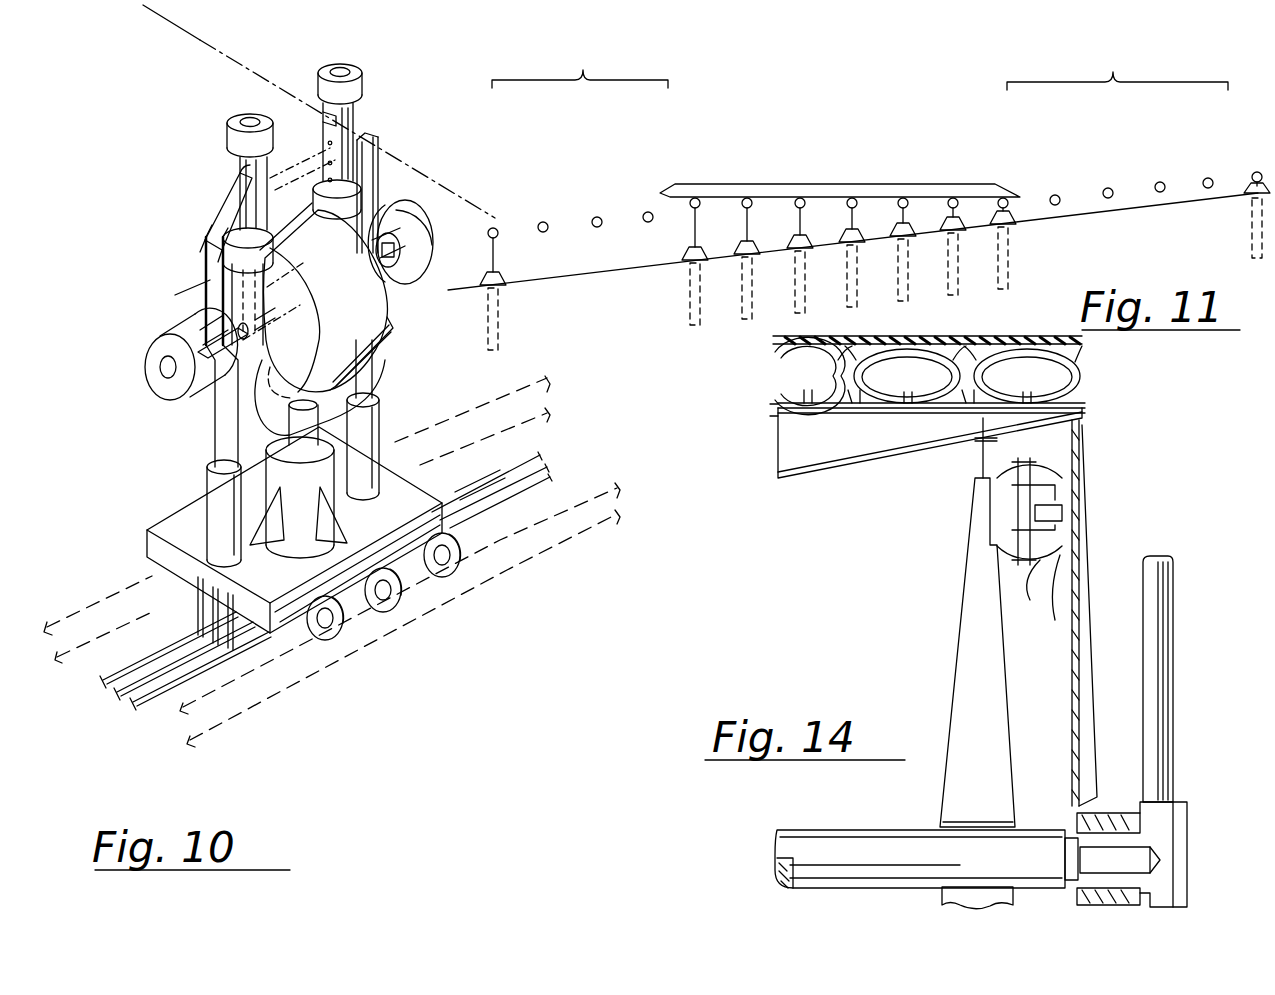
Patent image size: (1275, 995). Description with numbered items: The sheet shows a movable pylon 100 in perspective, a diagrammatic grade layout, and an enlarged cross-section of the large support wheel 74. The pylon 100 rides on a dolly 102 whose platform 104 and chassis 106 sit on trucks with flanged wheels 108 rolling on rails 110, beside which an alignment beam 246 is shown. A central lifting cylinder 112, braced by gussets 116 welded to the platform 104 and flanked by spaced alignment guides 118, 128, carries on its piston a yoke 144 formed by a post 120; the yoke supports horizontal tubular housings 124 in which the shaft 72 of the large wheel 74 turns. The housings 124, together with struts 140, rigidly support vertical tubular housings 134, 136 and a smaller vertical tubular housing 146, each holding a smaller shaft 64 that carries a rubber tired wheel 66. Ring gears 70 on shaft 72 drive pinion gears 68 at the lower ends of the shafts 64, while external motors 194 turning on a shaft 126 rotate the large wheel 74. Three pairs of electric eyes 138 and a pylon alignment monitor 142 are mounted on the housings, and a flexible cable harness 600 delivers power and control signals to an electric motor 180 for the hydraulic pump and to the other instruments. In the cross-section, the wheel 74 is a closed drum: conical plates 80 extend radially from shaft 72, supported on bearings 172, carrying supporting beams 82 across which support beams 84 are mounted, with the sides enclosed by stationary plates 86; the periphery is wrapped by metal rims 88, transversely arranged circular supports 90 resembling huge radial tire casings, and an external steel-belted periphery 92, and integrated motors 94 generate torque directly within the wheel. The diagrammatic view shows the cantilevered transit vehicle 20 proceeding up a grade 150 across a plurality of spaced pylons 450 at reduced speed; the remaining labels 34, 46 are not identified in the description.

In FIG. 11, the transit vehicle 20 is at (824, 175).
In FIG. 11, the bar end 34 is at (1005, 186).
In FIG. 11, the post 46 is at (732, 210).
In FIG. 10, the shaft 64 is at (222, 215).
In FIG. 10, the rubber tired wheel 66 is at (335, 62).
In FIG. 11, the rubber tired wheel 66 is at (695, 197).
In FIG. 10, the pinion gear 68 is at (290, 270).
In FIG. 14, the pinion gear 68 is at (1187, 850).
In FIG. 10, the ring gear 70 is at (300, 305).
In FIG. 14, the ring gear 70 is at (1160, 872).
In FIG. 14, the shaft 72 is at (838, 828).
In FIG. 10, the large support wheel 74 is at (400, 320).
In FIG. 14, the large support wheel 74 is at (772, 356).
In FIG. 14, the conical plates 80 is at (963, 566).
In FIG. 14, the supporting beams 82 is at (980, 460).
In FIG. 14, the support beams 84 is at (878, 470).
In FIG. 14, the stationary plates 86 is at (1084, 466).
In FIG. 14, the metal rims 88 is at (1085, 402).
In FIG. 14, the circular supports 90 is at (1082, 360).
In FIG. 14, the steel-belted periphery 92 is at (975, 340).
In FIG. 14, the motors 94 is at (1010, 580).
In FIG. 10, the pylon 100 is at (297, 659).
In FIG. 10, the dolly 102 is at (147, 545).
In FIG. 10, the platform 104 is at (325, 566).
In FIG. 10, the chassis 106 is at (183, 577).
In FIG. 10, the flanged wheels 108 is at (395, 612).
In FIG. 10, the rails 110 is at (555, 420).
In FIG. 10, the central lifting cylinder 112 is at (380, 400).
In FIG. 10, the gussets 116 is at (345, 508).
In FIG. 10, the alignment guide 118 is at (207, 475).
In FIG. 10, the post 120 is at (270, 380).
In FIG. 10, the tubular housing 124 is at (200, 350).
In FIG. 10, the shaft 126 is at (168, 378).
In FIG. 10, the alignment guide 128 is at (365, 425).
In FIG. 10, the vertical tubular housing 134 is at (232, 175).
In FIG. 10, the vertical tubular housing 136 is at (355, 132).
In FIG. 10, the electric eyes 138 is at (312, 156).
In FIG. 10, the struts 140 is at (380, 172).
In FIG. 10, the pylon alignment monitor 142 is at (352, 112).
In FIG. 10, the yoke 144 is at (252, 413).
In FIG. 10, the smaller vertical tubular housing 146 is at (396, 212).
In FIG. 11, the grade 150 is at (578, 280).
In FIG. 14, the bearings 172 is at (1140, 800).
In FIG. 10, the electric motor 180 is at (432, 478).
In FIG. 10, the external motors 194 is at (146, 372).
In FIG. 10, the alignment beam 246 is at (200, 30).
In FIG. 11, the pylons 450 is at (1074, 190).
In FIG. 10, the flexible cable harness 600 is at (195, 625).